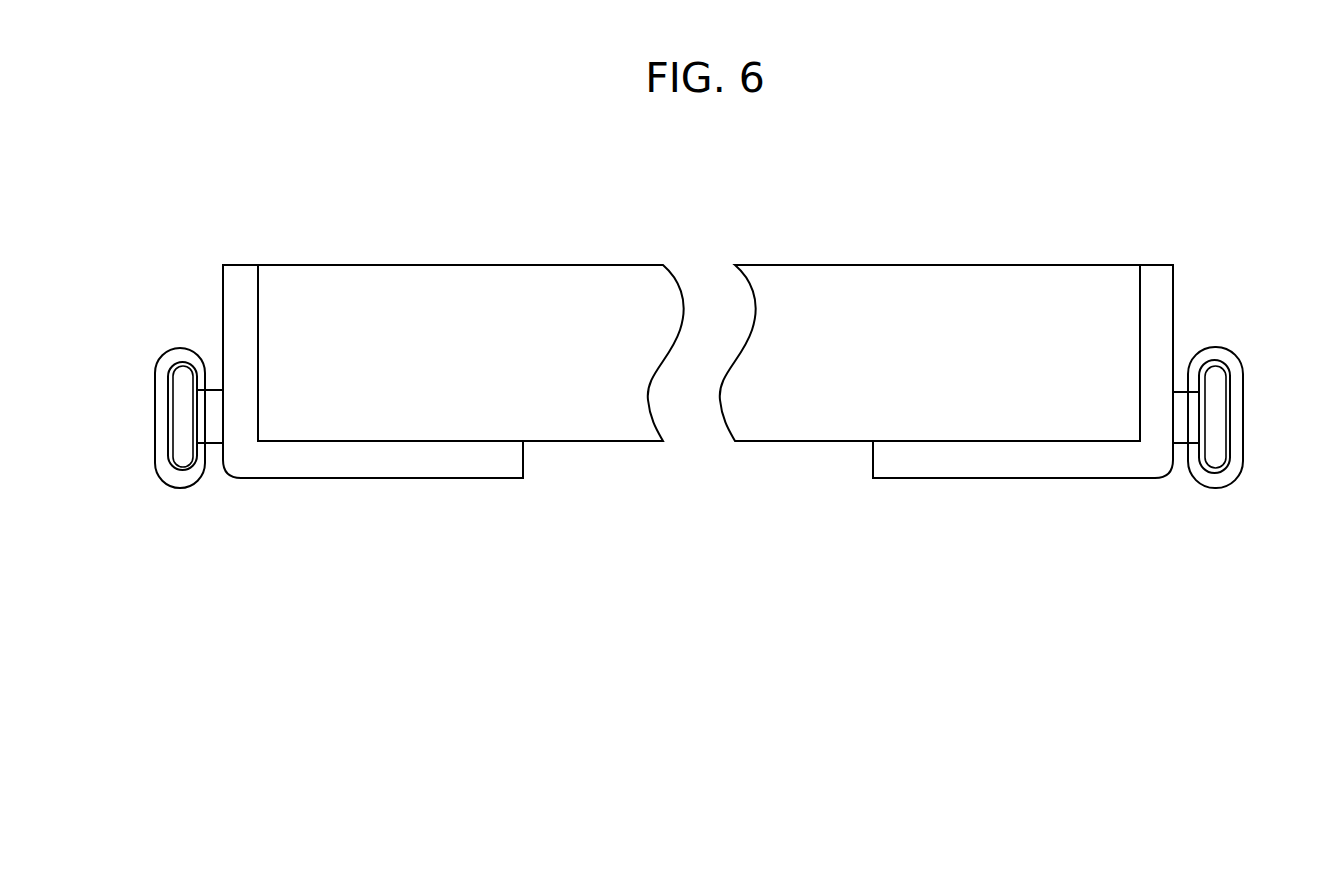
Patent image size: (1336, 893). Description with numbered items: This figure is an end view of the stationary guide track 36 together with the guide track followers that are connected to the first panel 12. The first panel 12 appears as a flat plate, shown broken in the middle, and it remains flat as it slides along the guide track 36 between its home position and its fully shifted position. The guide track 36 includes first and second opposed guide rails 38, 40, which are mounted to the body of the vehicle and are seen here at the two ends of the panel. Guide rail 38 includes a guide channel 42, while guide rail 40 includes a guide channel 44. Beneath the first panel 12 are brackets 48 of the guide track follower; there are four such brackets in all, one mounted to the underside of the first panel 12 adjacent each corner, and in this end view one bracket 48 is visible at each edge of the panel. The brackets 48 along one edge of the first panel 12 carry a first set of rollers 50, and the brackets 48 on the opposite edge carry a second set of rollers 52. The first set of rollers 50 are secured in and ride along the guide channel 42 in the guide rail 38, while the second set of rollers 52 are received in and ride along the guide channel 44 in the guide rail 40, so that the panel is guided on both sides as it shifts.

The guide track 36 is at (280, 193).
The first panel 12 is at (367, 293).
The brackets 48 is at (333, 472).
The first guide rail 38 is at (152, 393).
The guide channel 42 is at (178, 362).
The first set of rollers 50 is at (180, 438).
The second guide rail 40 is at (1243, 395).
The guide channel 44 is at (1222, 362).
The second set of rollers 52 is at (1218, 455).